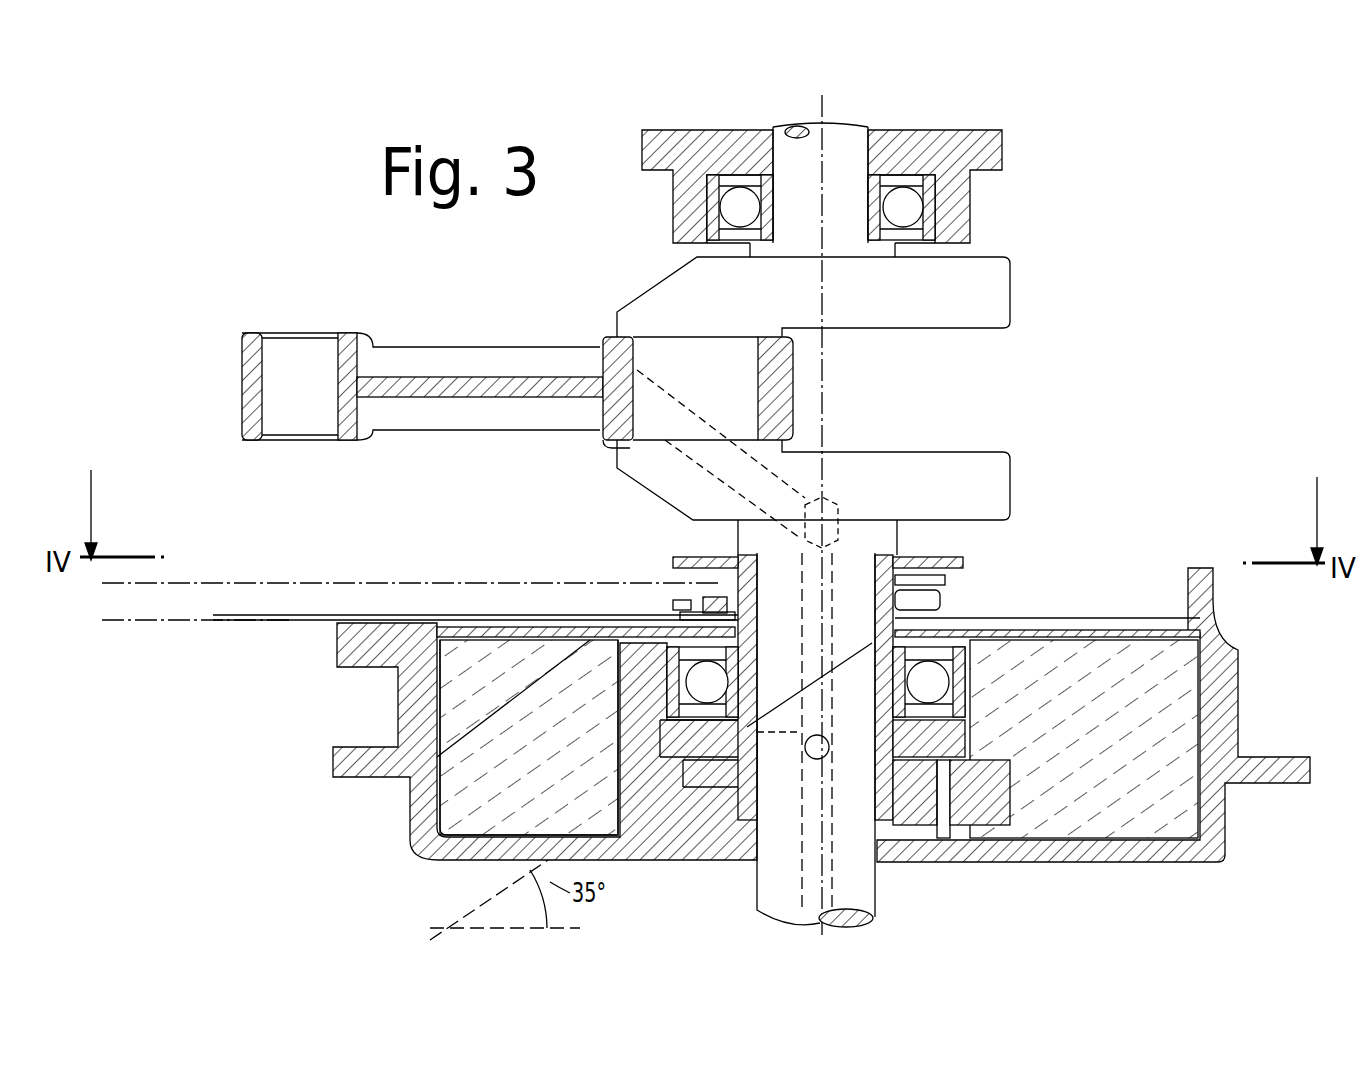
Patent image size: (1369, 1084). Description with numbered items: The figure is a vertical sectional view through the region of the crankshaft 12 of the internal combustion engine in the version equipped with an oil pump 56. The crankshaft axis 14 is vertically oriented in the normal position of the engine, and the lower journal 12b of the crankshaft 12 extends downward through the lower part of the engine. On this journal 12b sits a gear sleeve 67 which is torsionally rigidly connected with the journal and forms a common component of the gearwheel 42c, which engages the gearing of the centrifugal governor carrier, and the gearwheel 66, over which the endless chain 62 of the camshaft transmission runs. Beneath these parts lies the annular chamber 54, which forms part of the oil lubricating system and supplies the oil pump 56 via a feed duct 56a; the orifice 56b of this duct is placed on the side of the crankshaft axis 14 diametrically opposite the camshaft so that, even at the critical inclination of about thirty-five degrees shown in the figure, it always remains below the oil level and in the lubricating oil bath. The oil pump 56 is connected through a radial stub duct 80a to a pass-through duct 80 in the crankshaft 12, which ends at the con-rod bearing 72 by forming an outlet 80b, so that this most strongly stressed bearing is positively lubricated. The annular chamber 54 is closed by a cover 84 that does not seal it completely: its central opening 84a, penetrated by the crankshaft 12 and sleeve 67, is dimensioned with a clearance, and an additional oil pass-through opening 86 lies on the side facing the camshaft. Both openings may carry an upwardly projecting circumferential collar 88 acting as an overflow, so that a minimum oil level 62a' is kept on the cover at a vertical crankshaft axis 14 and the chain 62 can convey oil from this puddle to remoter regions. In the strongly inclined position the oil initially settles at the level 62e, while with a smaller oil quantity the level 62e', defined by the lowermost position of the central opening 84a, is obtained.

The crankshaft axis 14 is at (826, 118).
The crankshaft 12 is at (1020, 275).
The con-rod bearing 72 is at (655, 345).
The outlet 80b is at (608, 443).
The pass-through duct 80 is at (835, 565).
The gearwheel 42c is at (947, 555).
The endless chain 62 is at (250, 583).
The oil level 62a' is at (476, 577).
The circumferential collar 88 is at (615, 607).
The oil pass-through opening 86 is at (615, 625).
The central opening 84a is at (728, 560).
The gear sleeve 67 is at (915, 583).
The gearwheel 66 is at (925, 600).
The cover 84 is at (1105, 632).
The oil level 62e is at (480, 737).
The oil level 62e' is at (497, 900).
The radial stub duct 80a is at (770, 865).
The oil pump 56 is at (930, 832).
The feed duct 56a is at (945, 838).
The orifice 56b is at (1020, 832).
The annular chamber 54 is at (1193, 860).
The lower journal 12b is at (870, 895).